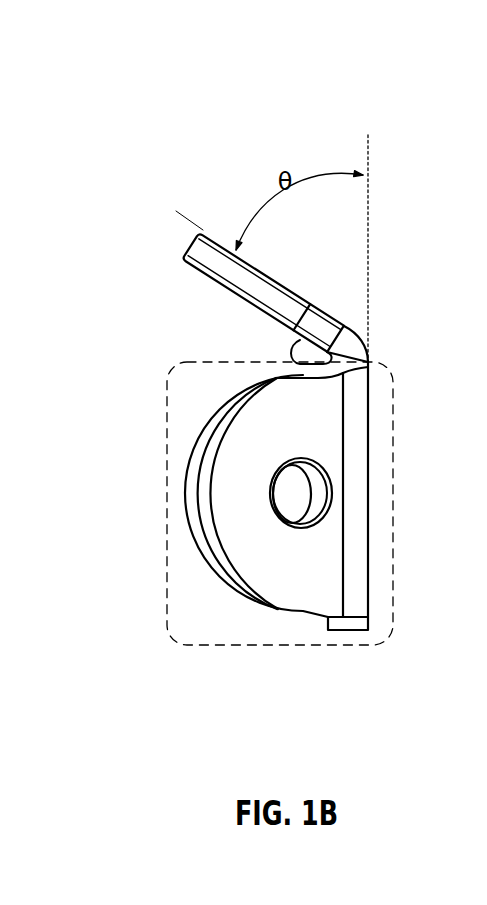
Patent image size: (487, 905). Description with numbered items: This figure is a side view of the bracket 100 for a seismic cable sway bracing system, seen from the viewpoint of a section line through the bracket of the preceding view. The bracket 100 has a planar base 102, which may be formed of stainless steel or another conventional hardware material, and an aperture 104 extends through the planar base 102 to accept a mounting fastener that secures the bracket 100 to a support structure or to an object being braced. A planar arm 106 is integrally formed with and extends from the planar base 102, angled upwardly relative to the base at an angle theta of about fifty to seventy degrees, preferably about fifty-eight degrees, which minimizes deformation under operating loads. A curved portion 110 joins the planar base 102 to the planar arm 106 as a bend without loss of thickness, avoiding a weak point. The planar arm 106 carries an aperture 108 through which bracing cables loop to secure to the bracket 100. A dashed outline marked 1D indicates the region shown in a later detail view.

The bracket 100 is at (185, 73).
The planar base 102 is at (347, 630).
The aperture 104 is at (370, 493).
The planar arm 106 is at (192, 246).
The aperture 108 is at (252, 310).
The curved portion 110 is at (302, 337).
The detail view region of FIG. 1D is at (395, 543).